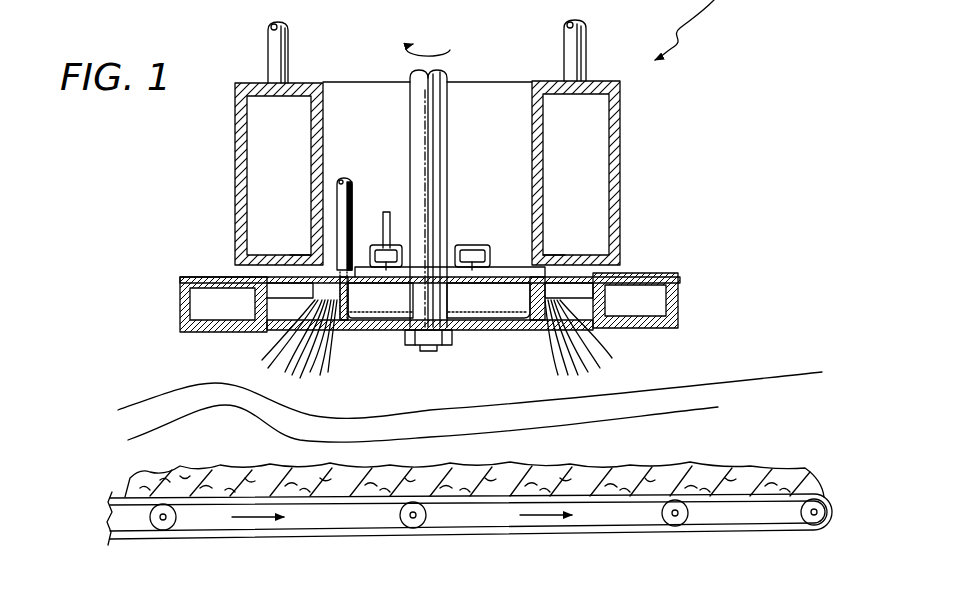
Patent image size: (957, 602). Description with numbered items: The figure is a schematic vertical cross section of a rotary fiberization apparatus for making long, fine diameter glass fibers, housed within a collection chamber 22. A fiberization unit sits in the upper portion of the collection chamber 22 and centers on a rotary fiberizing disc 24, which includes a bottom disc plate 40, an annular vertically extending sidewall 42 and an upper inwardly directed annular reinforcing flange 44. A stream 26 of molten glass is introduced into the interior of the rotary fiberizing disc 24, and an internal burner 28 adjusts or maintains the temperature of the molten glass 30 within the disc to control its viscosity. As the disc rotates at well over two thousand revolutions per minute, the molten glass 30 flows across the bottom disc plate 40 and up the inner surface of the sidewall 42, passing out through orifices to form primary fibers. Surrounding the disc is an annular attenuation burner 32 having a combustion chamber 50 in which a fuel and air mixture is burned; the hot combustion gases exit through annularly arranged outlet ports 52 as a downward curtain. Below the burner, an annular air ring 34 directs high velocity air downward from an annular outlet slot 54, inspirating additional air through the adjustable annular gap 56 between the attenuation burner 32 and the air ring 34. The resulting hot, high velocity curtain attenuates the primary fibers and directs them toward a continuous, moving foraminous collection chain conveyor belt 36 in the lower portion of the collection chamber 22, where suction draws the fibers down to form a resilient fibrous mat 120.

The collection chamber 22 is at (752, 363).
The rotary fiberizing disc 24 is at (378, 338).
The stream of molten glass 26 is at (345, 290).
The internal burner 28 is at (487, 249).
The molten glass 30 is at (455, 318).
The annular attenuation burner 32 is at (655, 187).
The annular air ring 34 is at (686, 278).
The collection chain conveyor belt 36 is at (440, 534).
The bottom disc plate 40 is at (480, 331).
The annular vertically extending sidewall 42 is at (580, 318).
The upper inwardly directed annular reinforcing flange 44 is at (497, 275).
The combustion chamber 50 is at (290, 186).
The outlet ports 52 is at (303, 257).
The annular outlet slot 54 is at (262, 315).
The annular gap 56 is at (235, 269).
The resilient fibrous mat 120 is at (520, 469).